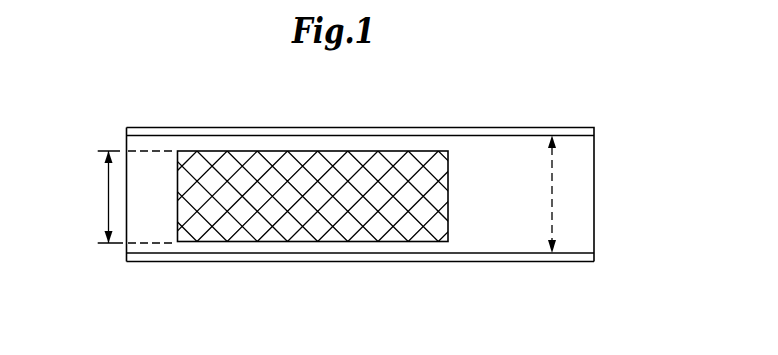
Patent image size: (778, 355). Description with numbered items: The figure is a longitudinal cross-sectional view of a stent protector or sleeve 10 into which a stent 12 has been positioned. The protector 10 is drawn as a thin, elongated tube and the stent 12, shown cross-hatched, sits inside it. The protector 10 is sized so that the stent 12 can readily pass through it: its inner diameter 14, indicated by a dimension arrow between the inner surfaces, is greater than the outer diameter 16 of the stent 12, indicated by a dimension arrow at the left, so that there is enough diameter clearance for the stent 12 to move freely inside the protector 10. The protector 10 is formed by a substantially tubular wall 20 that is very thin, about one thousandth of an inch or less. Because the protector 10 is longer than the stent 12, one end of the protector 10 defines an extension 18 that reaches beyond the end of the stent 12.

The stent protector 10 is at (489, 123).
The stent 12 is at (335, 151).
The inner diameter 14 is at (552, 200).
The outer diameter 16 is at (109, 187).
The extension 18 is at (493, 261).
The tubular wall 20 is at (594, 258).